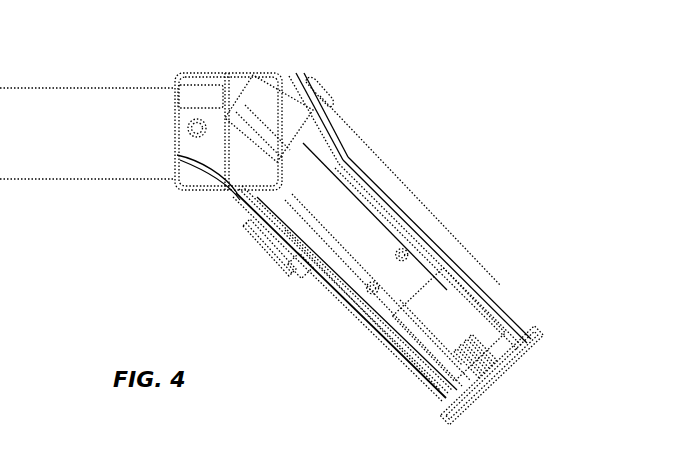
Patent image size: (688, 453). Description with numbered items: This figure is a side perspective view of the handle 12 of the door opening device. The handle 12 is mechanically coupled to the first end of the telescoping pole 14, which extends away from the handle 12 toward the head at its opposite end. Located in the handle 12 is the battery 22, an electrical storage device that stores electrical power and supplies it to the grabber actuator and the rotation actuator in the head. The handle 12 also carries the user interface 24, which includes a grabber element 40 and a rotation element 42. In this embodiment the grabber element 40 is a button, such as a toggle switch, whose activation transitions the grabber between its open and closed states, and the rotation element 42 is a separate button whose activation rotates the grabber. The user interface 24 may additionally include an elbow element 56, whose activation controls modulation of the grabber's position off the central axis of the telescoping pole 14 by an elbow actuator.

The handle 12 is at (532, 338).
The telescoping pole 14 is at (87, 158).
The battery 22 is at (470, 318).
The user interface 24 is at (284, 231).
The grabber element 40 is at (288, 258).
The rotation element 42 is at (312, 90).
The elbow element 56 is at (251, 234).